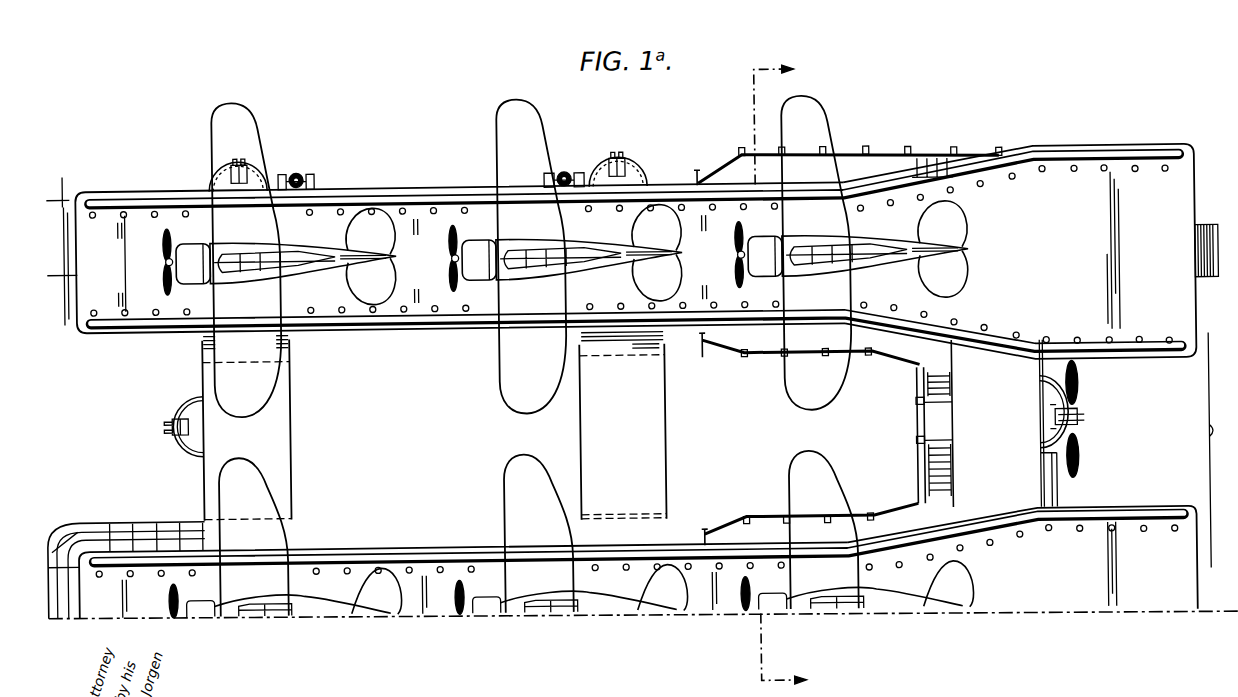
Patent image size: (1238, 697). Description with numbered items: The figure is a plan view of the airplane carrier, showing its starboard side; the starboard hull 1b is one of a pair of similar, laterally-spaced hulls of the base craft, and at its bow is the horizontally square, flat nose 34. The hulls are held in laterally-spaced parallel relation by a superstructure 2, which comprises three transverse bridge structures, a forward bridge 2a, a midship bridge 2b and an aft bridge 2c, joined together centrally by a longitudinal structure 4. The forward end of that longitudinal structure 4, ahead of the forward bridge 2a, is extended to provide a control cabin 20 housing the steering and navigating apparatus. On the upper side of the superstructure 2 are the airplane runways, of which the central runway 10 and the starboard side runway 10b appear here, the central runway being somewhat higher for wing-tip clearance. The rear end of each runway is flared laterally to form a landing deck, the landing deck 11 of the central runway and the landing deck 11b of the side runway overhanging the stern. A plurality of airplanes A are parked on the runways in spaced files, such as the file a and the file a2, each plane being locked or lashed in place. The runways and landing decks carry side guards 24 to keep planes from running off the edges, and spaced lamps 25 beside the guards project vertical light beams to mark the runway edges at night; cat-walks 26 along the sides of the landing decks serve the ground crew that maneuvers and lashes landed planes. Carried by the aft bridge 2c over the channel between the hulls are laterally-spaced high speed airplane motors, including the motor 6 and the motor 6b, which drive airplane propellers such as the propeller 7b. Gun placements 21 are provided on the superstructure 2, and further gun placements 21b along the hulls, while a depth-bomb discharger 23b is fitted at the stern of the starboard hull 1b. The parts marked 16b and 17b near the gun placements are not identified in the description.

The starboard hull 1b is at (63, 169).
The superstructure 2 is at (1221, 449).
The forward transverse bridge structure 2a is at (283, 421).
The midship transverse bridge structure 2b is at (660, 428).
The aft transverse bridge structure 2c is at (1046, 492).
The longitudinal structure 4 is at (184, 521).
The airplane motor 6 is at (767, 379).
The airplane motor 6b is at (1080, 408).
The airplane propeller 7b is at (1080, 384).
The central airplane runway 10 is at (453, 568).
The side airplane runway 10b is at (479, 330).
The landing deck 11 is at (1058, 608).
The landing deck 11b is at (1068, 267).
The bearing bracket 16b is at (318, 176).
The shaft 17b is at (298, 169).
The control cabin 20 is at (75, 522).
The gun placement 21 is at (195, 405).
The gun placement 21b is at (222, 168).
The depth-bomb discharger 23b is at (1208, 261).
The side guard 24 is at (327, 203).
The lamp 25 is at (125, 211).
The cat-walk 26 is at (877, 164).
The flat nose 34 is at (74, 281).
The file of airplanes a is at (148, 606).
The file of airplanes a2 is at (147, 274).
The airplane A is at (314, 266).